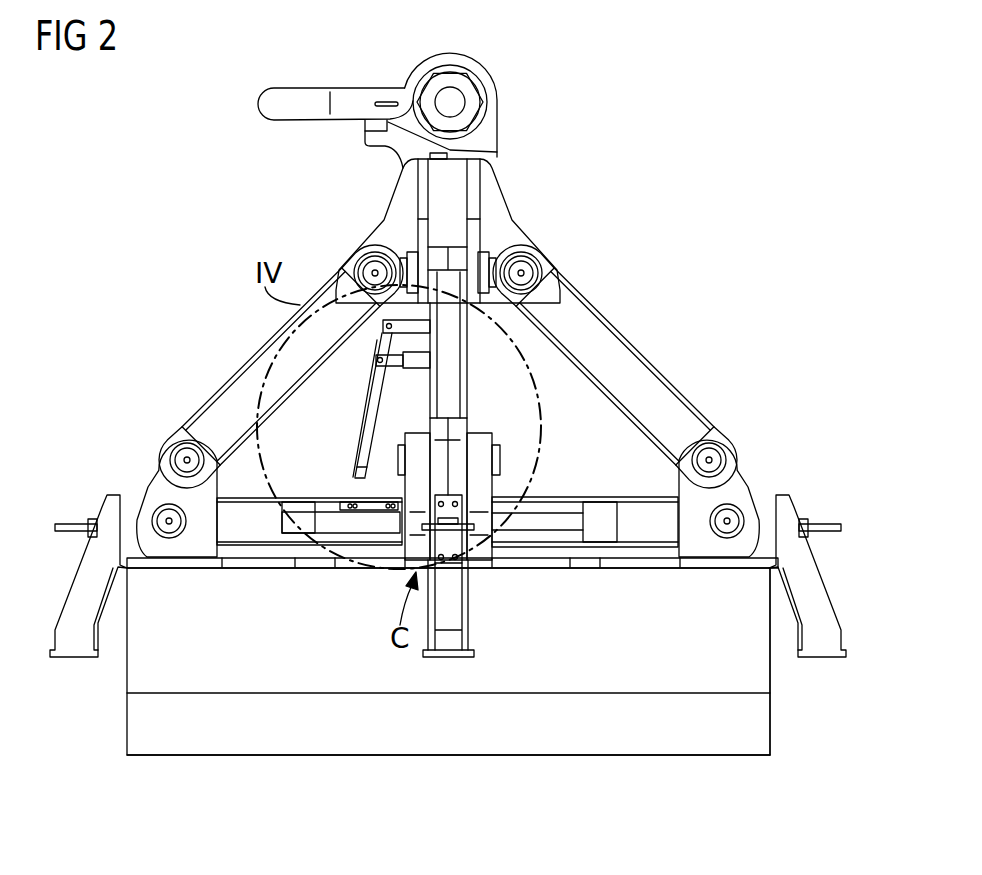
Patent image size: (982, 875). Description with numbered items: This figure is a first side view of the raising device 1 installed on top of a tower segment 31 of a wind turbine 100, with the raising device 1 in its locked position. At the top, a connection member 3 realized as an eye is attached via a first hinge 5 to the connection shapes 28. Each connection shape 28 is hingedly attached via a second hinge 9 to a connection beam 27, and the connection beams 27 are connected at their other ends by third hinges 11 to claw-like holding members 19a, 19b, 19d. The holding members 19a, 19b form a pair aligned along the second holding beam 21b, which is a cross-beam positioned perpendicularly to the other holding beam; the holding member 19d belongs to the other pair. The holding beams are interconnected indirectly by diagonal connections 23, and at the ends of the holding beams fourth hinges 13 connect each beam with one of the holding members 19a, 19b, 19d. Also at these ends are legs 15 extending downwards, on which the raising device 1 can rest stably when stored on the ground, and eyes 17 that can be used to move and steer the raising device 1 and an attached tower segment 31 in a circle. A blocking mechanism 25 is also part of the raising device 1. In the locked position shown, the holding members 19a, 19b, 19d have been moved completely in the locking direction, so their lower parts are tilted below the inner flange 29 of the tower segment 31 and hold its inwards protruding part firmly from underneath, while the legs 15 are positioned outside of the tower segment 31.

The raising device 1 is at (650, 136).
The connection member 3 is at (285, 95).
The first hinge 5 is at (465, 99).
The second hinge 9 is at (362, 270).
The third hinge 11 is at (177, 455).
The fourth hinge 13 is at (170, 540).
The leg 15 is at (83, 600).
The eye 17 is at (62, 525).
The holding member 19a is at (165, 480).
The holding member 19b is at (738, 482).
The holding member 19d is at (505, 437).
The second holding beam 21b is at (628, 513).
The diagonal connection 23 is at (563, 517).
The blocking mechanism 25 is at (332, 416).
The connection beam 27 is at (250, 380).
The connection shape 28 is at (517, 233).
The inner flange 29 is at (140, 675).
The tower segment 31 is at (652, 780).
The wind turbine 100 is at (652, 780).